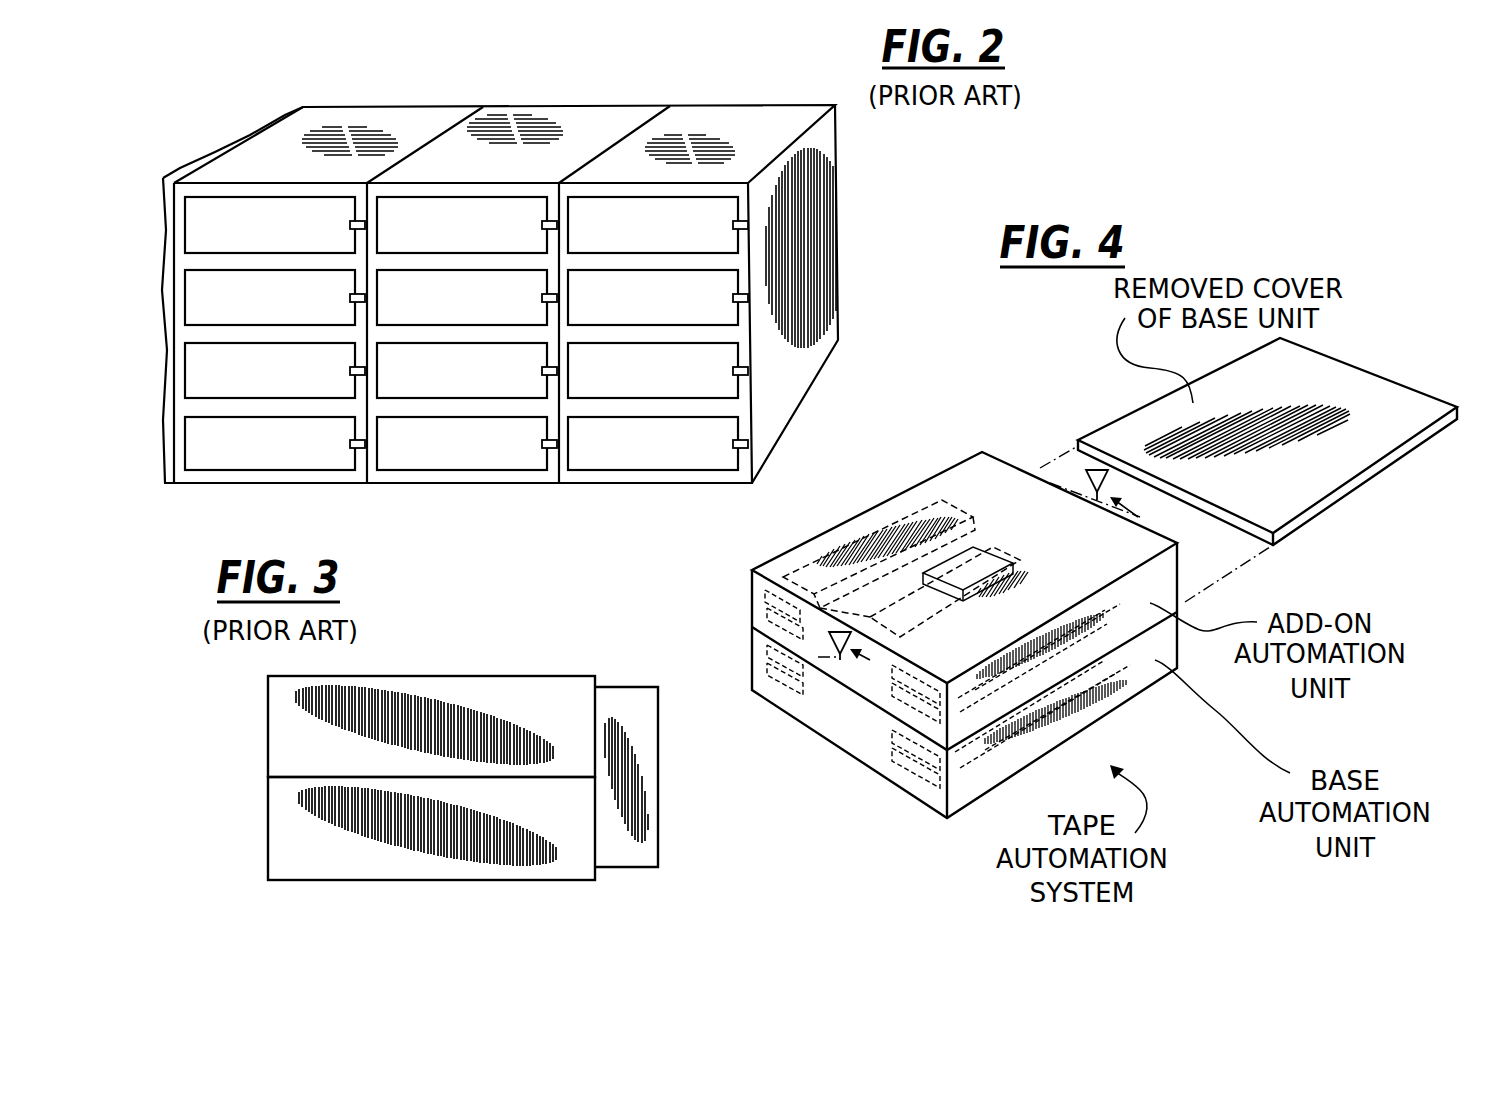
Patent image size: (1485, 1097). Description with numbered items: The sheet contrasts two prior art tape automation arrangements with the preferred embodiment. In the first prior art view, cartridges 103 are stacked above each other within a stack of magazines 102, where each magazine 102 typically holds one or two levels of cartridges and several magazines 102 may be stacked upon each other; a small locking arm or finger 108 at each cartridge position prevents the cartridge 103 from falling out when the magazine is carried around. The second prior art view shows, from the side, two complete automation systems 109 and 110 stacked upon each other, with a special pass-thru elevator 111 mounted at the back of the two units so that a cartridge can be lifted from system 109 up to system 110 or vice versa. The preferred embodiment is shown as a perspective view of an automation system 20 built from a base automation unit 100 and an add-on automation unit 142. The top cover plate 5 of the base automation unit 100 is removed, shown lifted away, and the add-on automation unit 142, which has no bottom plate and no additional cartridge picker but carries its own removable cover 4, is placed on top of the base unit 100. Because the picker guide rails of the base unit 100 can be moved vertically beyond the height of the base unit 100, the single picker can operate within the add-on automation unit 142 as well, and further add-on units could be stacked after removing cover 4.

In FIG. 2, the magazine 102 is at (468, 294).
In FIG. 2, the cartridge 103 is at (197, 447).
In FIG. 2, the locking arm or finger 108 is at (735, 442).
In FIG. 3, the automation system 110 is at (295, 733).
In FIG. 3, the automation system 109 is at (293, 824).
In FIG. 3, the pass-thru elevator 111 is at (637, 684).
In FIG. 4, the automation system 20 is at (982, 629).
In FIG. 4, the add-on automation unit 142 is at (752, 612).
In FIG. 4, the base automation unit 100 is at (870, 715).
In FIG. 4, the top cover plate 5 is at (1328, 474).
In FIG. 4, the removable cover 4 is at (1155, 552).